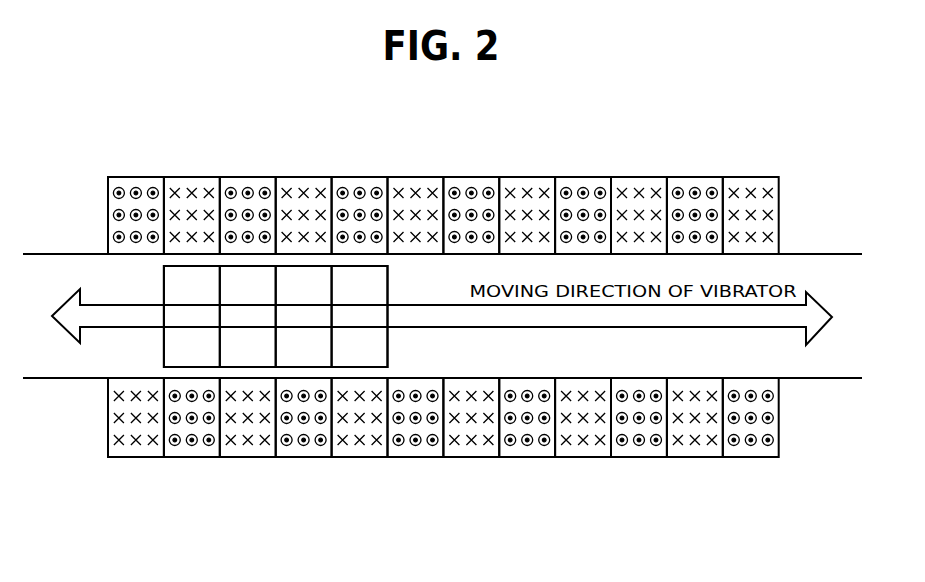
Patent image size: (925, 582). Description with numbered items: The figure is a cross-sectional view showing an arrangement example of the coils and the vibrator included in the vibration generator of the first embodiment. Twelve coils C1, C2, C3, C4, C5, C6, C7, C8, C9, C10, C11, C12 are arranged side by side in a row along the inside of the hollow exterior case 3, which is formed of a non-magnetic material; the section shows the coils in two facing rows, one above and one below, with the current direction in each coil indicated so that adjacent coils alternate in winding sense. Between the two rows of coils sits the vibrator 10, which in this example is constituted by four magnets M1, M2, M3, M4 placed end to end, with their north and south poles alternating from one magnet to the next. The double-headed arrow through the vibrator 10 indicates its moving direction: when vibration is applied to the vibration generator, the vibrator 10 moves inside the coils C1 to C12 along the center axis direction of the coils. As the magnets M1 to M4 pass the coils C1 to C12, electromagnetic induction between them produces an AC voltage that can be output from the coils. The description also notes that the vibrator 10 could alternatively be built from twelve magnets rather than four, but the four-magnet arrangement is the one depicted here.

The exterior case 3 is at (822, 252).
The vibrator 10 is at (311, 226).
The magnet M1 is at (207, 264).
The magnet M2 is at (263, 264).
The magnet M3 is at (319, 264).
The magnet M4 is at (374, 264).
The coil C1 is at (132, 175).
The coil C2 is at (188, 175).
The coil C3 is at (244, 175).
The coil C4 is at (300, 175).
The coil C5 is at (356, 175).
The coil C6 is at (412, 175).
The coil C7 is at (467, 175).
The coil C8 is at (523, 175).
The coil C9 is at (579, 175).
The coil C10 is at (635, 175).
The coil C11 is at (691, 175).
The coil C12 is at (747, 175).